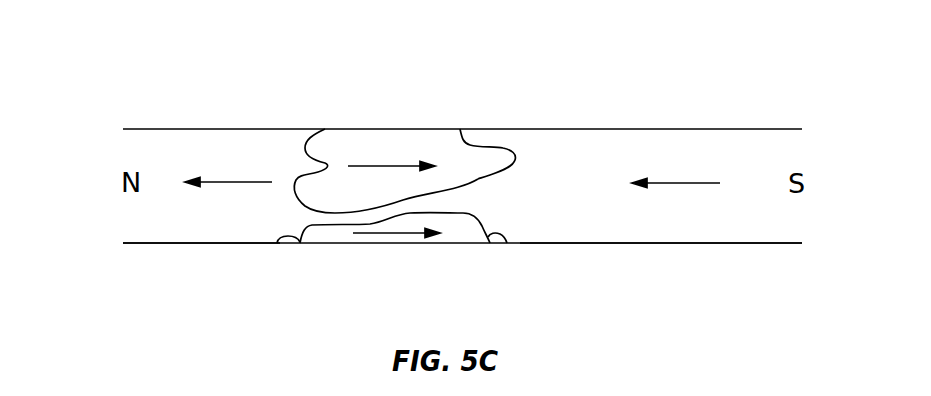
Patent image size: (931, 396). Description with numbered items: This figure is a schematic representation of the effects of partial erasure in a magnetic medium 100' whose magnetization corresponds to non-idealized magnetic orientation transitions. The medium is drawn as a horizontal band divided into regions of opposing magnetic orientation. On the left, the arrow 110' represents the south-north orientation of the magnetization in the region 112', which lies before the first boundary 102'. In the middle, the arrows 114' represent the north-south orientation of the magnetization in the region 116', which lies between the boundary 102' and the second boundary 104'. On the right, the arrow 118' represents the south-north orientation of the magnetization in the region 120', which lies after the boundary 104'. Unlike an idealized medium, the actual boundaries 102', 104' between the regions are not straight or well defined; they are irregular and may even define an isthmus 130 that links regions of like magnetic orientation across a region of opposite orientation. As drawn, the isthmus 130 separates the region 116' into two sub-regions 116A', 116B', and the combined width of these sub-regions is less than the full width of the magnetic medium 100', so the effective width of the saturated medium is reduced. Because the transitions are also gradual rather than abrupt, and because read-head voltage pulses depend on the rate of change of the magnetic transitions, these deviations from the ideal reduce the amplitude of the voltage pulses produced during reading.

The magnetic medium 100' is at (462, 170).
The region 116' is at (462, 174).
The sub-region 116A' is at (462, 102).
The sub-region 116B' is at (462, 268).
The region 112' is at (201, 274).
The region 120' is at (661, 268).
The arrow 110' is at (228, 163).
The arrow 118' is at (676, 161).
The boundary 102' is at (296, 191).
The boundary 104' is at (511, 180).
The isthmus 130 is at (342, 218).
The arrow 114' is at (382, 228).